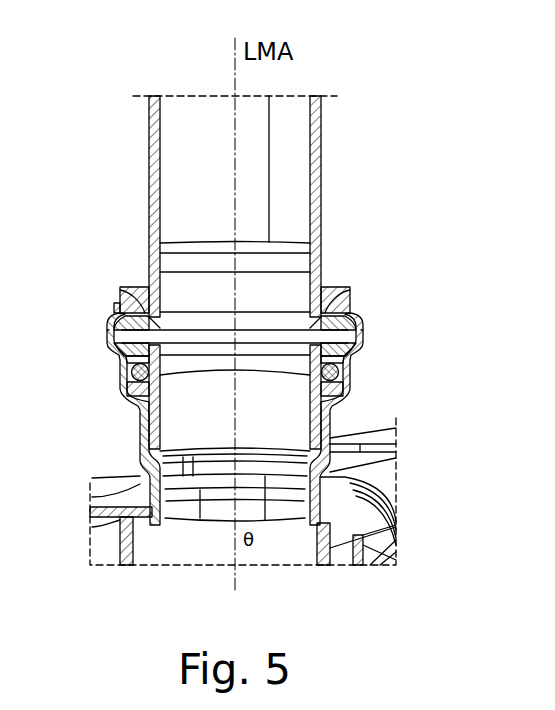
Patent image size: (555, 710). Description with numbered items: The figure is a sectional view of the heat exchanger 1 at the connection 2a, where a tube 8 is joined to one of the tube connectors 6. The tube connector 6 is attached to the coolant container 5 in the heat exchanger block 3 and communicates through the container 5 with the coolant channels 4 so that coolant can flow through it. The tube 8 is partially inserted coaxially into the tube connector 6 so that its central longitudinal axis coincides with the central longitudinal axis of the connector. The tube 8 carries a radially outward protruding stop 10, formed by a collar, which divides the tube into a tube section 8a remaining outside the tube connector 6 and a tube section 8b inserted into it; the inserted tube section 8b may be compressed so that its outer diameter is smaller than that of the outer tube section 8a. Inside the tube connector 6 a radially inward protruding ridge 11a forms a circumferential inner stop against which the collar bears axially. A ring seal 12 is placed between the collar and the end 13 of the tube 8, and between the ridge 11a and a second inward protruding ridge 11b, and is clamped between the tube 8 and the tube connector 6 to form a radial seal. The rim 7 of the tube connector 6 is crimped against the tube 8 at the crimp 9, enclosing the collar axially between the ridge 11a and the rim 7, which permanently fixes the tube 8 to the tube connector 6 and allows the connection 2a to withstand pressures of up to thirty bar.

The heat exchanger 1 is at (365, 103).
The connection 2a is at (111, 313).
The heat exchanger block 3 is at (398, 510).
The coolant channels 4 is at (187, 548).
The coolant container 5 is at (92, 478).
The tube connector 6 is at (124, 372).
The rim 7 is at (343, 307).
The tube 8 is at (321, 150).
The tube section 8a is at (318, 188).
The tube section 8b is at (145, 413).
The crimp 9 is at (350, 294).
The stop 10 is at (352, 337).
The ridge 11a is at (351, 359).
The second ridge 11b is at (348, 394).
The ring seal 12 is at (349, 368).
The end 13 is at (120, 540).